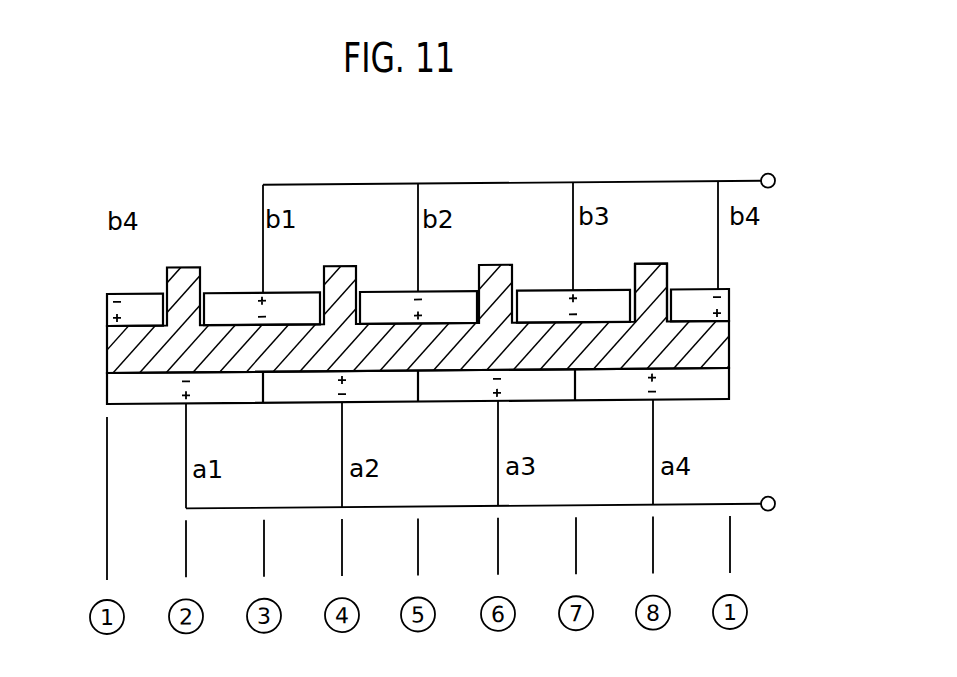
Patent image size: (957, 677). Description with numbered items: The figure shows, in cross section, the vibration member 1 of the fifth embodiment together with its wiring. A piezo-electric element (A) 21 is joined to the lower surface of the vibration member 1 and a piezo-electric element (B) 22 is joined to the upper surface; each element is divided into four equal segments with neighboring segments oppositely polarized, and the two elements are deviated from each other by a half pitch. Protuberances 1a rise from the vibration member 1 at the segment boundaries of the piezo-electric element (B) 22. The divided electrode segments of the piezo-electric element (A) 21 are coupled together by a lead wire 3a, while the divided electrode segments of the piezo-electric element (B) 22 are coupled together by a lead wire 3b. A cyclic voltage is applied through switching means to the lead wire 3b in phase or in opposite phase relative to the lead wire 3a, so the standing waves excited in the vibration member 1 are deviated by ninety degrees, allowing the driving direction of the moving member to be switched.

The vibration member 1 is at (720, 351).
The protuberance 1a is at (651, 275).
The piezo-electric element (A) 21 is at (723, 388).
The piezo-electric element (B) 22 is at (720, 300).
The lead wire 3a is at (186, 434).
The lead wire 3b is at (768, 174).